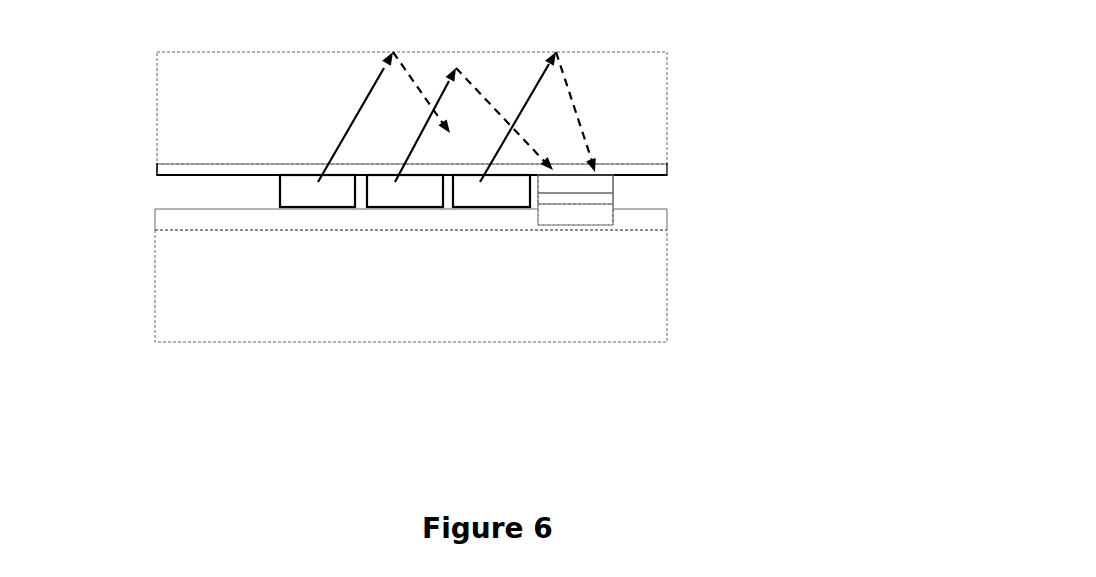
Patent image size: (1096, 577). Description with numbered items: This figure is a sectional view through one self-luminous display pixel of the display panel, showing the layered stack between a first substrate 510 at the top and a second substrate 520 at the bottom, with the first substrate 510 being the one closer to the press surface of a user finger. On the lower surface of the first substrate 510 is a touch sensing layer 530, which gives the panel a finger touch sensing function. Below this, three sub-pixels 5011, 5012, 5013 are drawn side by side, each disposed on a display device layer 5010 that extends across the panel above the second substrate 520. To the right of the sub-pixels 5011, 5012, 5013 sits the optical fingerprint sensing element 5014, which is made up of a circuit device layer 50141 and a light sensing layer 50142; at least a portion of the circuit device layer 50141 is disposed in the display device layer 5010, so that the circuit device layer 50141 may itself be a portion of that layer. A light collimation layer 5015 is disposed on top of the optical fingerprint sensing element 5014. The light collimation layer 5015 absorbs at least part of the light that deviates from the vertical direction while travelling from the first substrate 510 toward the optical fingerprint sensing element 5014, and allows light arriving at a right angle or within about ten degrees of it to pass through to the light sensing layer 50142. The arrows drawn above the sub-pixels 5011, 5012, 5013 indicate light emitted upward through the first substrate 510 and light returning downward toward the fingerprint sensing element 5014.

The first substrate 510 is at (178, 94).
The touch sensing layer 530 is at (178, 169).
The display device layer 5010 is at (183, 218).
The second substrate 520 is at (178, 300).
The sub-pixel 5011 is at (310, 193).
The sub-pixel 5012 is at (405, 188).
The sub-pixel 5013 is at (500, 188).
The optical fingerprint sensing element 5014 is at (728, 204).
The light collimation layer 5015 is at (580, 188).
The light sensing layer 50142 is at (578, 197).
The circuit device layer 50141 is at (572, 210).